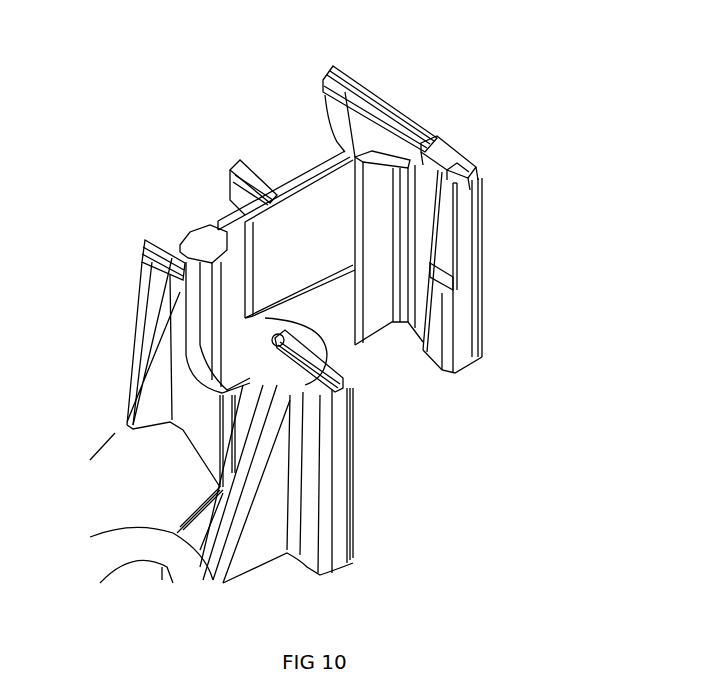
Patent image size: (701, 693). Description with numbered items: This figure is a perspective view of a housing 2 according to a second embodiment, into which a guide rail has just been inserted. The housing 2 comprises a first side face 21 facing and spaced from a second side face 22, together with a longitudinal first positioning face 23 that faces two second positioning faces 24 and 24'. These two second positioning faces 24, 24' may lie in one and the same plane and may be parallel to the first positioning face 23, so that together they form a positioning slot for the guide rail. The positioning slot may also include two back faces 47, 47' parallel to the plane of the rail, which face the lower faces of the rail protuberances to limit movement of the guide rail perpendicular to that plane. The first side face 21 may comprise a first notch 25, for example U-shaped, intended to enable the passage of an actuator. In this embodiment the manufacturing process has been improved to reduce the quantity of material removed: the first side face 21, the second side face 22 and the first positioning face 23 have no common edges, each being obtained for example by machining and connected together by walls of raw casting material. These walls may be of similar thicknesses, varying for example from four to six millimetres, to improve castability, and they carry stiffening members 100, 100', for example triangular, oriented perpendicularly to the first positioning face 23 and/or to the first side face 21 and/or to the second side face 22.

The housing 2 is at (462, 148).
The first side face 21 is at (263, 317).
The second side face 22 is at (443, 227).
The first positioning face 23 is at (302, 222).
The second positioning face 24 is at (431, 115).
The second positioning face 24' is at (200, 337).
The first notch 25 is at (235, 358).
The back face 47 is at (357, 98).
The back face 47' is at (139, 314).
The stiffening member 100 is at (213, 559).
The stiffening member 100' is at (226, 145).